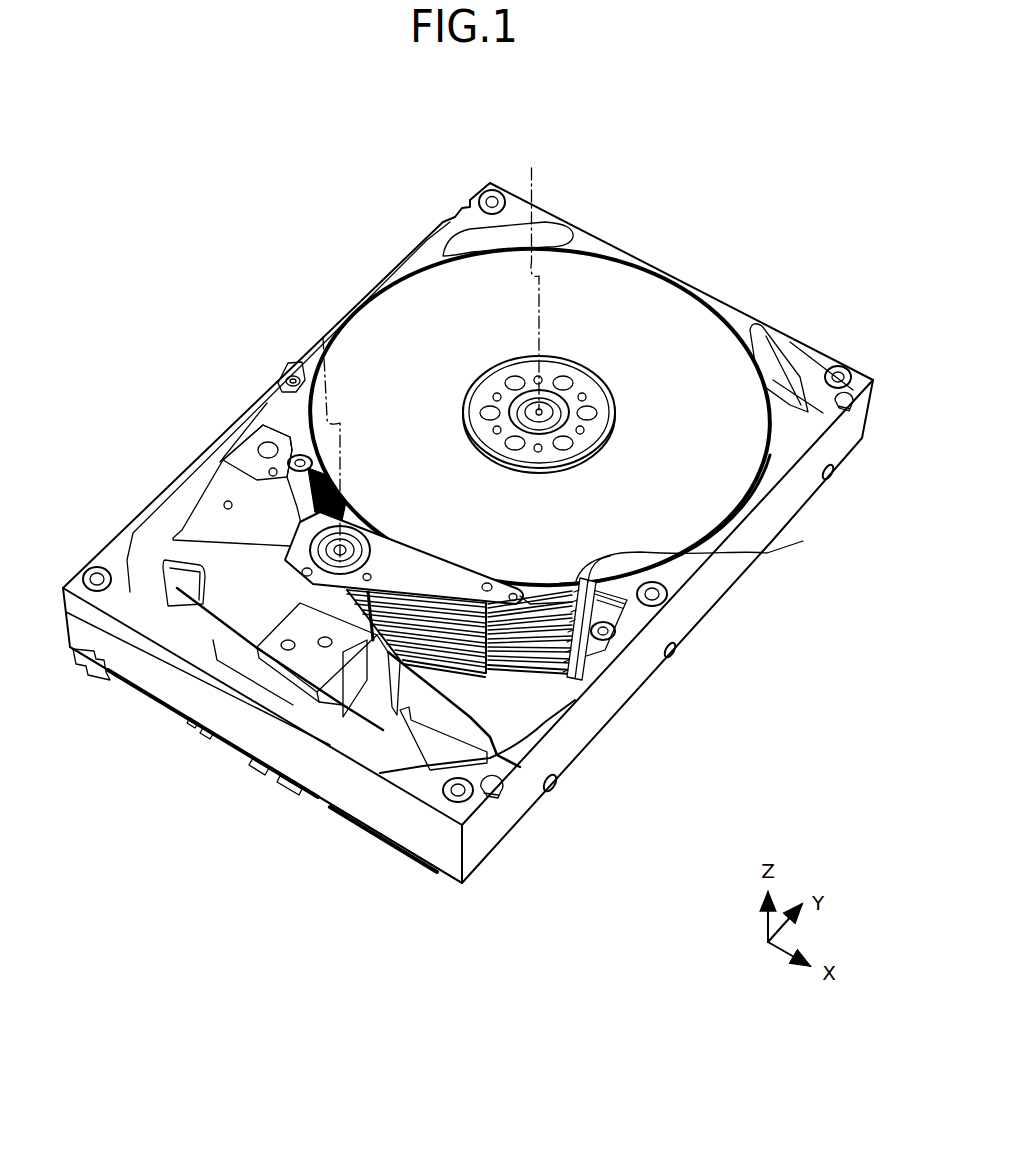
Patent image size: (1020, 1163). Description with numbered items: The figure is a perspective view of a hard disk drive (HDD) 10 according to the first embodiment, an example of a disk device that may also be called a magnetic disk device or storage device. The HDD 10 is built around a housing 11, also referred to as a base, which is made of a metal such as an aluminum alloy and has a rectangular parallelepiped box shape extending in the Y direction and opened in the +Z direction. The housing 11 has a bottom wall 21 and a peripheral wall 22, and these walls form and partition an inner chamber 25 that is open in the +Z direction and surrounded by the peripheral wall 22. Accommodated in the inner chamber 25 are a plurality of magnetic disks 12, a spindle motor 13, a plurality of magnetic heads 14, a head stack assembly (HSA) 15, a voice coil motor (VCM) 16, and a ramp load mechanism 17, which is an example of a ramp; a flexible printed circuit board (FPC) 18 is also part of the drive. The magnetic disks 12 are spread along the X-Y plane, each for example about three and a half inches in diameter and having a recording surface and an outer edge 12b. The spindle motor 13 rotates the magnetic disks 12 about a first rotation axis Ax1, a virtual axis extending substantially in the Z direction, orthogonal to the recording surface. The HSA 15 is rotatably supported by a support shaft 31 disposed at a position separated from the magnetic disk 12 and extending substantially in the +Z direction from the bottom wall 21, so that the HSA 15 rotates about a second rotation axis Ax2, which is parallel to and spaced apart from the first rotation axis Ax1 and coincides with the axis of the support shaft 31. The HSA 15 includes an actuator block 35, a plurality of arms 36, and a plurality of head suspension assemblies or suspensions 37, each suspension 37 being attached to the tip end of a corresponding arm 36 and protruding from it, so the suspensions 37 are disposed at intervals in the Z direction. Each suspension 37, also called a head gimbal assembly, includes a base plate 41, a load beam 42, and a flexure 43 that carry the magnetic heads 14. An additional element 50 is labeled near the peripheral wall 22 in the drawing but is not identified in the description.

The hard disk drive (HDD) 10 is at (215, 171).
The housing 11 is at (468, 562).
The magnetic disk 12 is at (429, 300).
The outer edge 12b is at (760, 456).
The spindle motor 13 is at (541, 410).
The magnetic head 14 is at (579, 591).
The head stack assembly (HSA) 15 is at (446, 483).
The voice coil motor (VCM) 16 is at (247, 490).
The ramp load mechanism 17 is at (632, 618).
The flexible printed circuit board (FPC) 18 is at (382, 652).
The bottom wall 21 is at (543, 680).
The peripheral wall 22 is at (732, 578).
The inner chamber 25 is at (513, 728).
The support shaft 31 is at (341, 548).
The actuator block 35 is at (305, 560).
The arm 36 is at (408, 560).
The head suspension assembly (suspension) 37 is at (530, 580).
The base plate 41 is at (517, 582).
The load beam 42 is at (550, 592).
The flexure 43 is at (362, 608).
The flexible cable 50 is at (767, 553).
The first rotation axis Ax1 is at (530, 272).
The second rotation axis Ax2 is at (323, 333).